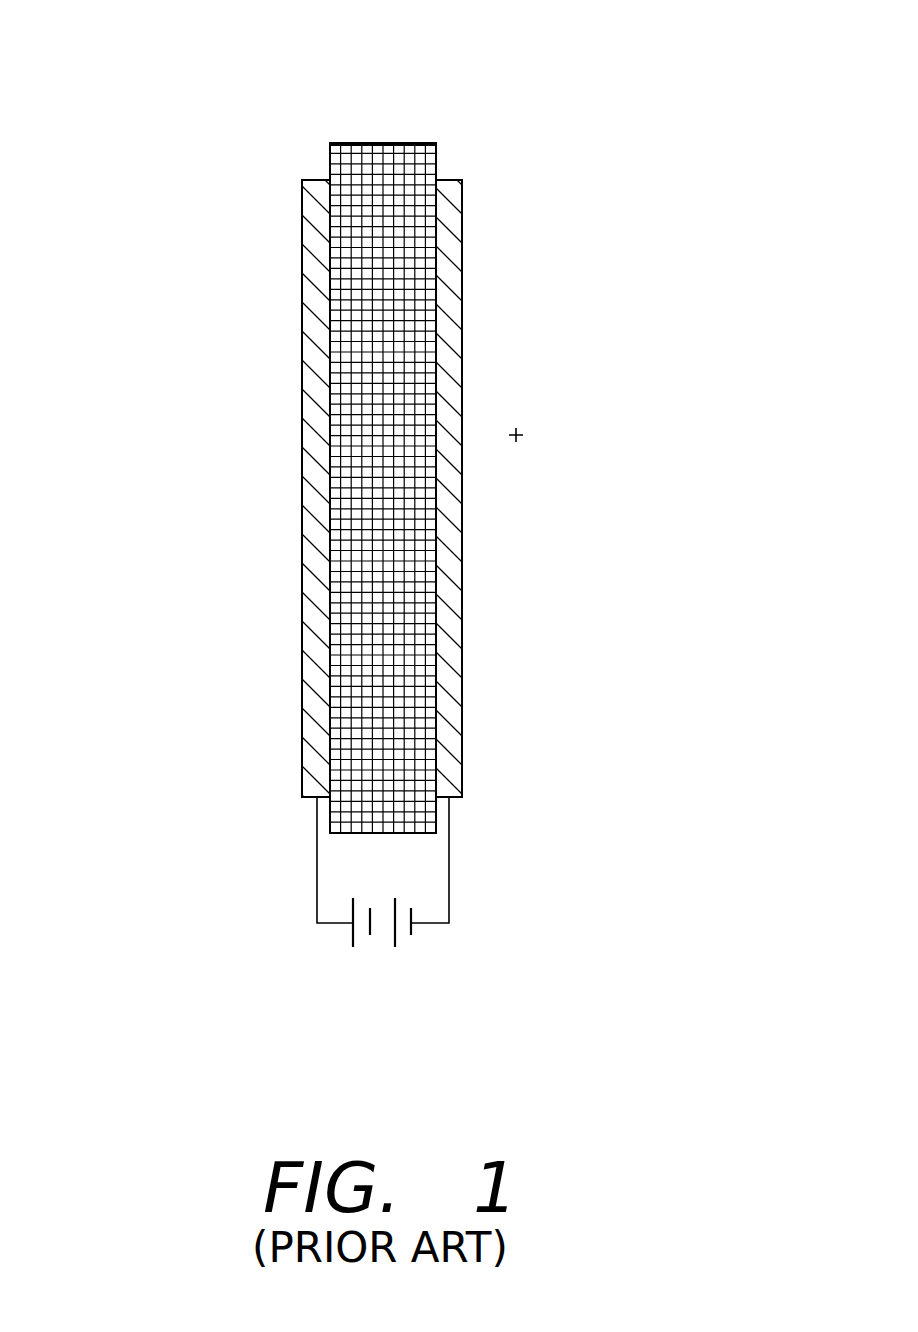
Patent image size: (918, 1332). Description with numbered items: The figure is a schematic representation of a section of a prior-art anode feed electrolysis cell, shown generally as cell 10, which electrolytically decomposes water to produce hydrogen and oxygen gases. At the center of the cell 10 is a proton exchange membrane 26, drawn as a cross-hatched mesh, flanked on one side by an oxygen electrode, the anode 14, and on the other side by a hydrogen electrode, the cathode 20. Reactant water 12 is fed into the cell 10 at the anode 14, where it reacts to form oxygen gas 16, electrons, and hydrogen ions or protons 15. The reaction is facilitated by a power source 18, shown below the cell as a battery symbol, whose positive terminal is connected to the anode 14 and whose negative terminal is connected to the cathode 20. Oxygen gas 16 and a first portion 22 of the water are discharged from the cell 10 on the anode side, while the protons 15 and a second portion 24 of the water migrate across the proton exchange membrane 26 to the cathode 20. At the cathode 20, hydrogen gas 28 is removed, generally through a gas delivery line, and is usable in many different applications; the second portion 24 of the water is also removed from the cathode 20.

The cell 10 is at (383, 519).
The reactant water 12 is at (512, 625).
The oxygen electrode (anode) 14 is at (462, 200).
The hydrogen ions (protons) 15 is at (390, 483).
The oxygen gas 16 is at (540, 365).
The power source 18 is at (433, 955).
The hydrogen electrode (cathode) 20 is at (303, 200).
The first portion of the water 22 is at (623, 393).
The second portion of the water 24 is at (228, 543).
The proton exchange membrane 26 is at (353, 143).
The hydrogen gas 28 is at (228, 423).